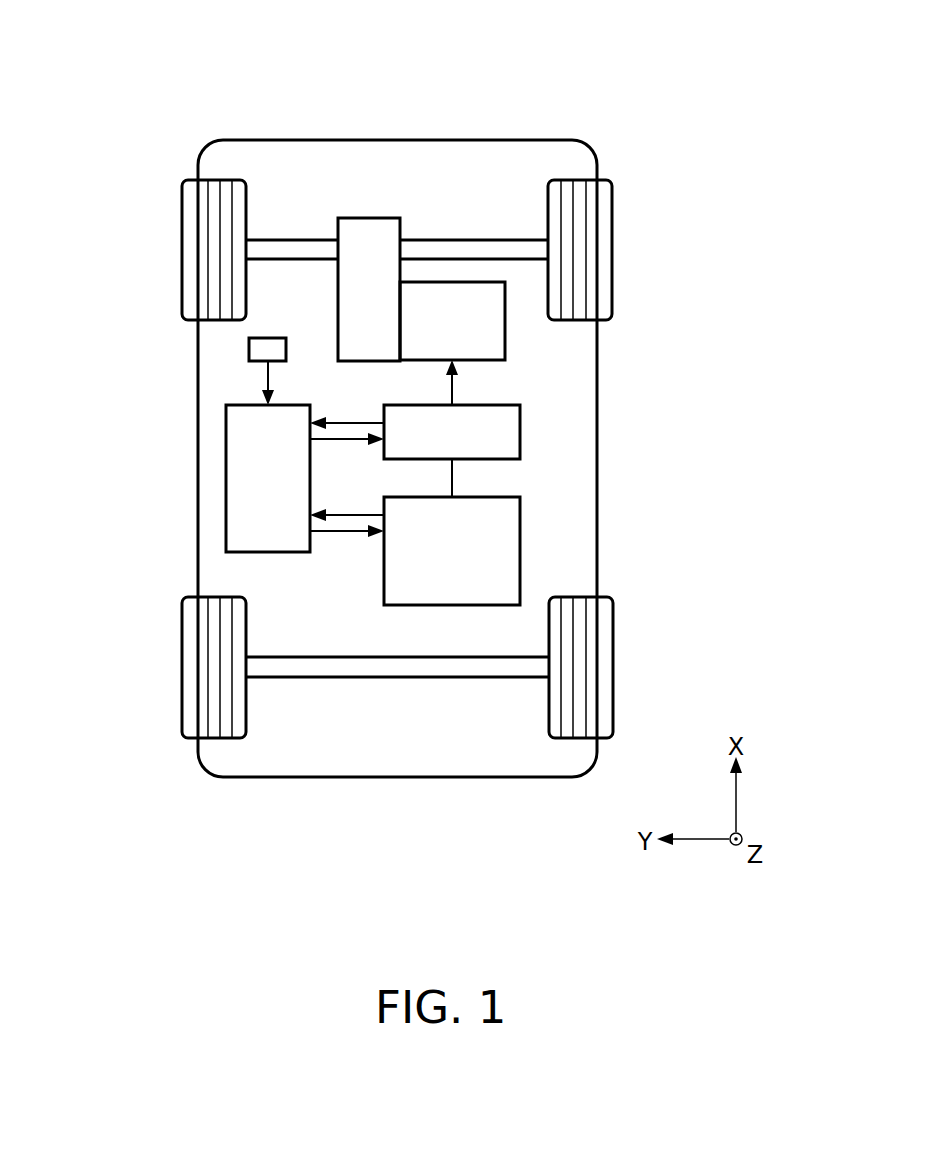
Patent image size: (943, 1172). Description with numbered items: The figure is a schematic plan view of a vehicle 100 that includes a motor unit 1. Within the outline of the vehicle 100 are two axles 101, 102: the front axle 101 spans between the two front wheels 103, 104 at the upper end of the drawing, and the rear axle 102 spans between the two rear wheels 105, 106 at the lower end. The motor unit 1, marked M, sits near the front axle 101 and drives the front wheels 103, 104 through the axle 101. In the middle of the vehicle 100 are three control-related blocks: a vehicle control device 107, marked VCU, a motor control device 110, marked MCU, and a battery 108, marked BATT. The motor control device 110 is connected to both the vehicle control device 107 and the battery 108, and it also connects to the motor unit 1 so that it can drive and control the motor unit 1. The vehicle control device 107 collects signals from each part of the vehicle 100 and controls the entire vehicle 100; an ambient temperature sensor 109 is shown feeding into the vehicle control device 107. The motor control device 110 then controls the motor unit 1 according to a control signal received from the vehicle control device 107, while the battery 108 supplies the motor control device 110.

The vehicle 100 is at (593, 96).
The motor unit 1 is at (454, 268).
The axle 101 is at (292, 250).
The axle 102 is at (314, 667).
The front wheel 103 is at (190, 207).
The front wheel 104 is at (600, 202).
The rear wheel 105 is at (190, 628).
The rear wheel 106 is at (602, 622).
The vehicle control device 107 is at (226, 477).
The battery 108 is at (520, 545).
The ambient temperature sensor 109 is at (249, 349).
The motor control device 110 is at (520, 430).